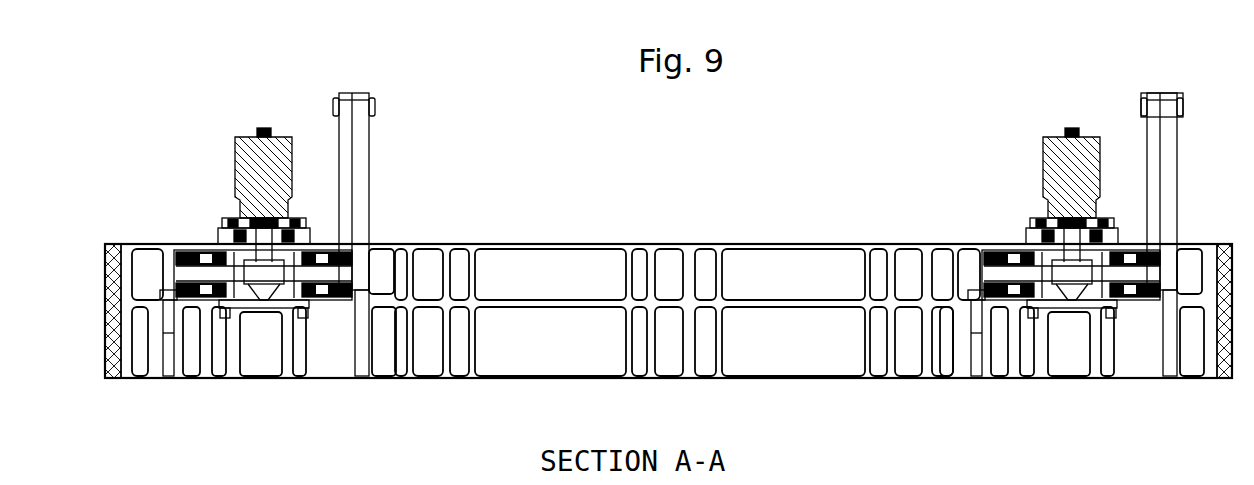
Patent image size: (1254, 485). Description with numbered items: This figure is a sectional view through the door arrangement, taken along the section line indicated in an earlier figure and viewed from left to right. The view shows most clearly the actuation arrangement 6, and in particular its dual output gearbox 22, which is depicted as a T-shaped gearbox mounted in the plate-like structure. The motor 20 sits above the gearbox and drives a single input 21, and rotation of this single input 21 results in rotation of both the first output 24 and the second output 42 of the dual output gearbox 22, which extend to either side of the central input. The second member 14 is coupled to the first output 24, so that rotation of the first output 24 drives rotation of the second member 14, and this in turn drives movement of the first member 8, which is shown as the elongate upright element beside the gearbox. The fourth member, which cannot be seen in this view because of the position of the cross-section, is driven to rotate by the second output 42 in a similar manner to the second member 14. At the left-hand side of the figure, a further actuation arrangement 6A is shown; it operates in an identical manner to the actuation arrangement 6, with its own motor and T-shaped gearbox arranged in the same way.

The actuation arrangement 6 is at (1077, 235).
The further actuation arrangement 6A is at (275, 113).
The first member 8 is at (1180, 234).
The second member 14 is at (1161, 65).
The motor 20 is at (1086, 134).
The single input 21 is at (1052, 182).
The dual output gearbox 22 is at (1026, 215).
The first output 24 is at (1126, 343).
The second output 42 is at (1009, 354).